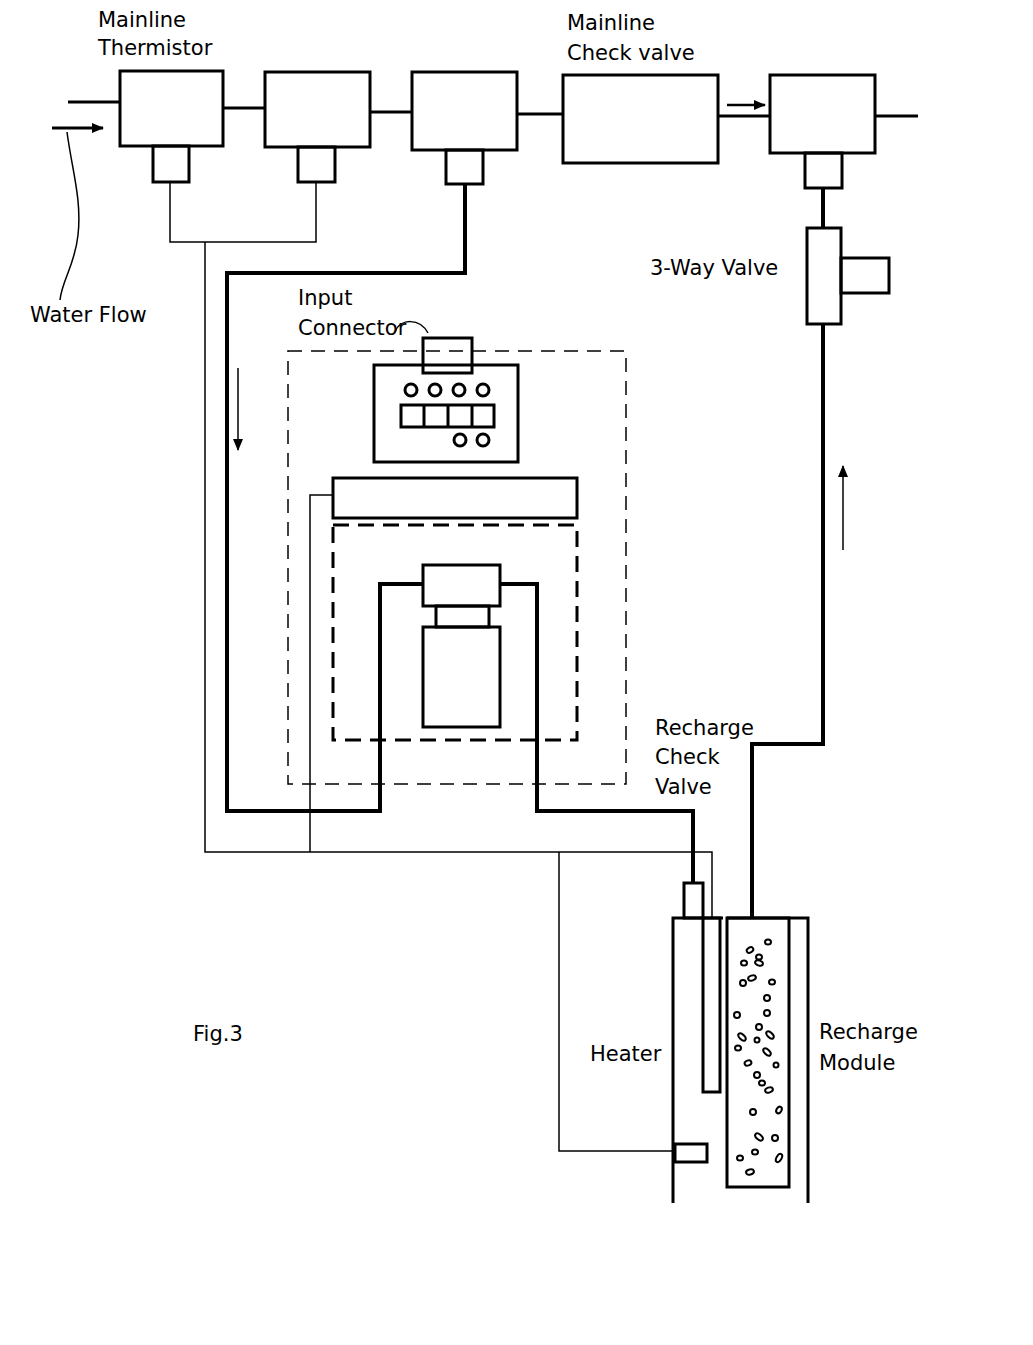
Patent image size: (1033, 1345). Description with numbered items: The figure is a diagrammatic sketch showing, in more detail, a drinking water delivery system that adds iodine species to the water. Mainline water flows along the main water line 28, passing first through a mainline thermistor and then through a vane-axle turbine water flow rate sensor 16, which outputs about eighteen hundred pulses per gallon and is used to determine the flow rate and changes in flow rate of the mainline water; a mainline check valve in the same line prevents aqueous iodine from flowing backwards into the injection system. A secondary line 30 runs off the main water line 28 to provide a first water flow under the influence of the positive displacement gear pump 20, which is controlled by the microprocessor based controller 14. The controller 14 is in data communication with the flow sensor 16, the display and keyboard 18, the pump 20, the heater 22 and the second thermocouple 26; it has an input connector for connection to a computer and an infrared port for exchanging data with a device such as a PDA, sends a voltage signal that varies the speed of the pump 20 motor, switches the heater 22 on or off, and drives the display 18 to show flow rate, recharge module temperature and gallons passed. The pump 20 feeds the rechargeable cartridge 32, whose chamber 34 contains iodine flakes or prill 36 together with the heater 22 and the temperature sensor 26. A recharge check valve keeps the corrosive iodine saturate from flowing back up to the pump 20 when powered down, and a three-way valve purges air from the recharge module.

The main water line 28 is at (83, 102).
The vane-axle turbine water flow rate sensor 16 is at (285, 150).
The display and keyboard 18 is at (508, 363).
The microprocessor based controller 14 is at (577, 501).
The positive displacement gear pump 20 is at (478, 680).
The secondary line 30 is at (226, 627).
The heater 22 is at (706, 985).
The second thermocouple 26 is at (685, 1144).
The iodine flakes or prill 36 is at (770, 985).
The chamber 34 is at (783, 1085).
The rechargeable cartridge 32 is at (809, 1138).